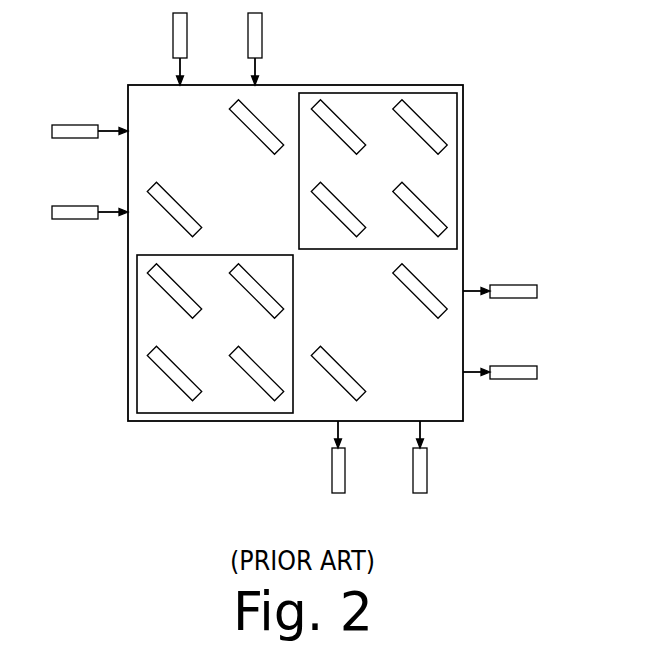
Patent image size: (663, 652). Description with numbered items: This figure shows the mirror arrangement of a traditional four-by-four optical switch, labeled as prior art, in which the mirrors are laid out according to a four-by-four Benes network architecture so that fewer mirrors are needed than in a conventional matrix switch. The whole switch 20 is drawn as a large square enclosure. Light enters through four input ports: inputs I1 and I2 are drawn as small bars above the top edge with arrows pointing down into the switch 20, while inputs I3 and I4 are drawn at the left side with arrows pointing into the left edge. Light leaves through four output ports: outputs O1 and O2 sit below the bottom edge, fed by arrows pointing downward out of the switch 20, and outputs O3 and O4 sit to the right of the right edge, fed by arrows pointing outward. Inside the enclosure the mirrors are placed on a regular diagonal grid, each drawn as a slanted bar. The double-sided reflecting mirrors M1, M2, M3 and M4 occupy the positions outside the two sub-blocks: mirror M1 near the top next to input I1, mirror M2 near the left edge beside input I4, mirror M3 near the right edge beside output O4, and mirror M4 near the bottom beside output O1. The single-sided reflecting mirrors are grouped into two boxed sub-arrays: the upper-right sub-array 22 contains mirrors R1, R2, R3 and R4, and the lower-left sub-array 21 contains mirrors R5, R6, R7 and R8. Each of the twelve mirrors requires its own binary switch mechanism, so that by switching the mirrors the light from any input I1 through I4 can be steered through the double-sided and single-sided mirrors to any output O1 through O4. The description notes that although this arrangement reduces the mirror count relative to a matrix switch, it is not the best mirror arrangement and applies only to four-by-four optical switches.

The optical switch (prior art) 20 is at (294, 258).
The reflector array 21 is at (177, 334).
The reflector array 22 is at (416, 171).
The input port I1 is at (270, 49).
The input port I2 is at (195, 49).
The input port I3 is at (90, 116).
The input port I4 is at (90, 197).
The output port O1 is at (353, 462).
The output port O2 is at (434, 462).
The output port O3 is at (500, 357).
The output port O4 is at (500, 274).
The double-sided reflecting mirror M1 is at (256, 129).
The double-sided reflecting mirror M2 is at (174, 211).
The double-sided reflecting mirror M3 is at (419, 293).
The double-sided reflecting mirror M4 is at (338, 375).
The single-sided reflecting mirror R1 is at (338, 130).
The single-sided reflecting mirror R2 is at (419, 130).
The single-sided reflecting mirror R3 is at (338, 212).
The single-sided reflecting mirror R4 is at (419, 212).
The single-sided reflecting mirror R5 is at (174, 294).
The single-sided reflecting mirror R6 is at (256, 294).
The single-sided reflecting mirror R7 is at (174, 376).
The single-sided reflecting mirror R8 is at (256, 376).